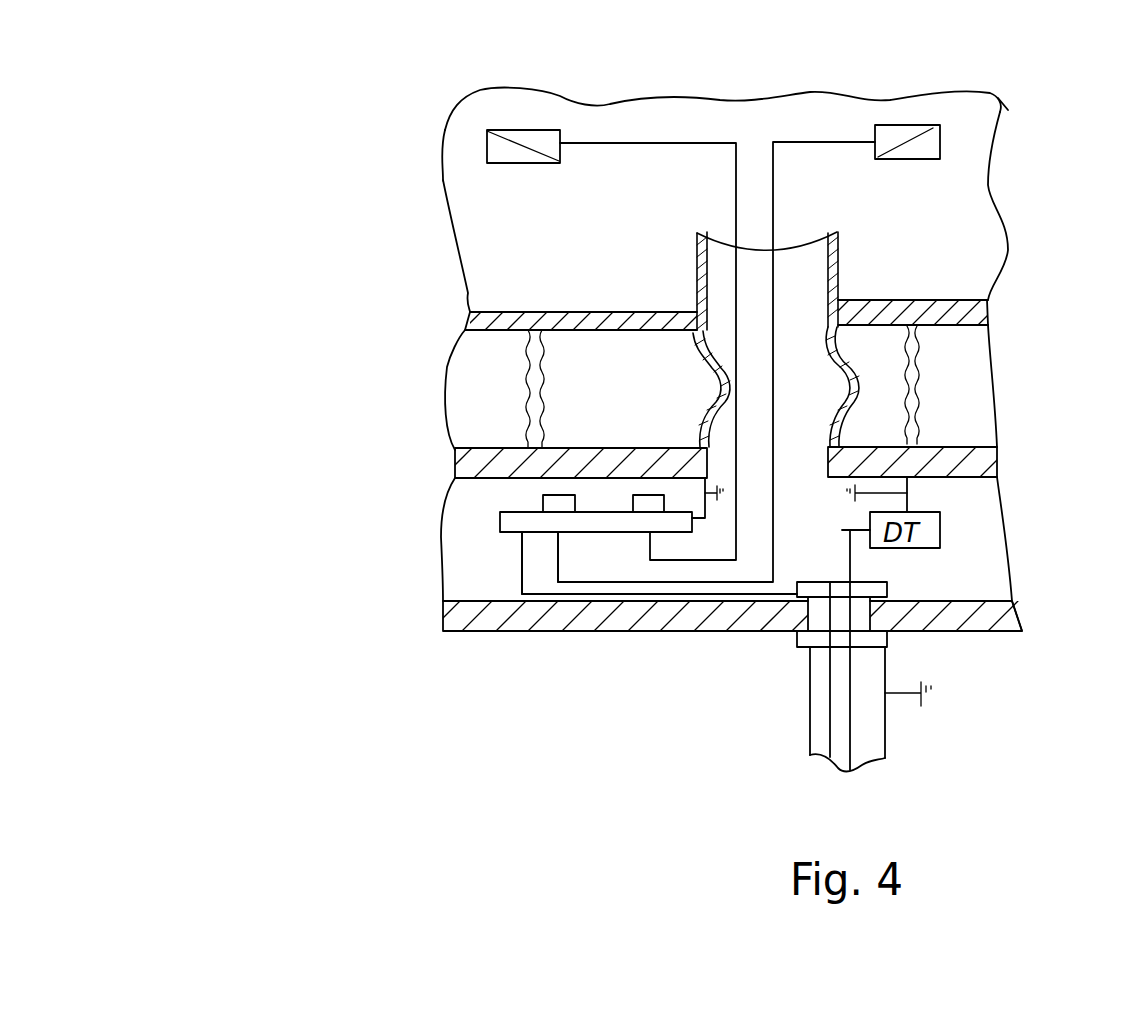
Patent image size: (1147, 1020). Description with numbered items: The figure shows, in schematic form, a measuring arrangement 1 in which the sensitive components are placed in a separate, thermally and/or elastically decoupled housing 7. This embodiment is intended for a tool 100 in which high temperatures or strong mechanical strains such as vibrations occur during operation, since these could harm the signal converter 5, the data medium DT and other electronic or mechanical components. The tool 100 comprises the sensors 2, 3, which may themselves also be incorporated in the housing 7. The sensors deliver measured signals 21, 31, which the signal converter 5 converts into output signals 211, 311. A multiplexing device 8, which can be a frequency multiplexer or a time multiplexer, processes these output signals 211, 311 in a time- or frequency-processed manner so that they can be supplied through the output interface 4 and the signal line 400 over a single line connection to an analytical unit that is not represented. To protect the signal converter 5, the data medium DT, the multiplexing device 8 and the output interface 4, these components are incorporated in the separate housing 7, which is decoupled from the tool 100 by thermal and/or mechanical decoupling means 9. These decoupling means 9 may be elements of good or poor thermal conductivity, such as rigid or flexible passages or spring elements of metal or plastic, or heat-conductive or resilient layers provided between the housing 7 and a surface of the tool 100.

The measuring arrangement 1 is at (347, 268).
The sensor 2 is at (500, 152).
The sensor 3 is at (940, 147).
The output interface 4 is at (887, 643).
The signal converter 5 is at (497, 518).
The multiplexing device 8 is at (603, 503).
The housing 7 is at (1057, 613).
The decoupling means 9 is at (528, 377).
The measured signal 21 is at (693, 560).
The measured signal 31 is at (573, 585).
The tool 100 is at (1037, 90).
The output signal 211 is at (523, 557).
The output signal 311 is at (540, 563).
The signal line 400 is at (887, 758).